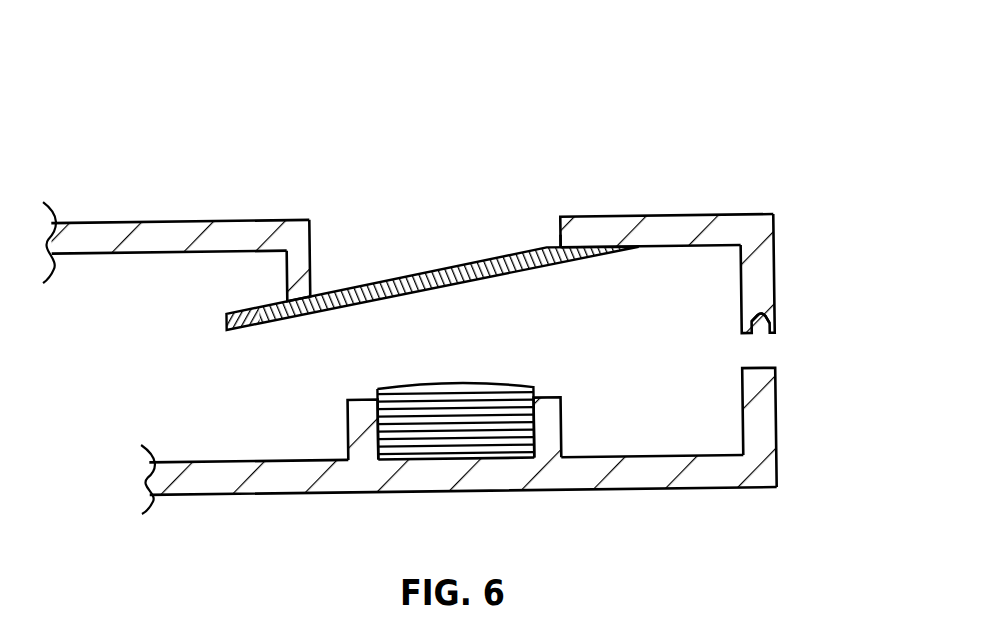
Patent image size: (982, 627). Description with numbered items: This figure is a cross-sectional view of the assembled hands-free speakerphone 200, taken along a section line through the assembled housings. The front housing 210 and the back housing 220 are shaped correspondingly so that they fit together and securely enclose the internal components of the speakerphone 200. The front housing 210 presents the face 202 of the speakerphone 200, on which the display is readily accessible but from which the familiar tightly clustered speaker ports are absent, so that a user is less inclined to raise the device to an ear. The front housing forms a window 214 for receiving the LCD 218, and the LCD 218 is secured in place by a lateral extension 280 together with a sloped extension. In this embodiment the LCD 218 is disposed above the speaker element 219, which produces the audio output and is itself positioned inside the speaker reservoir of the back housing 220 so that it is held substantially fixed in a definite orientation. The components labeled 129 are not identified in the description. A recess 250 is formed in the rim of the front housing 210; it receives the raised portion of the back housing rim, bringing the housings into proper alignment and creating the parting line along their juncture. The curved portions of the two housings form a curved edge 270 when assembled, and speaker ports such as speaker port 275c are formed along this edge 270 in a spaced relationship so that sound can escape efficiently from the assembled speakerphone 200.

The hands-free speakerphone 200 is at (67, 78).
The face 202 is at (157, 218).
The lateral extension 280 is at (312, 250).
The LCD 218 is at (470, 267).
The window 214 is at (552, 241).
The front housing 210 is at (777, 236).
The recess 250 is at (761, 327).
The curved edge 270 is at (850, 291).
The back housing 220 is at (720, 491).
The support blocks 129 is at (347, 429).
The speaker element 219 is at (495, 387).
The speaker port 275c is at (758, 362).